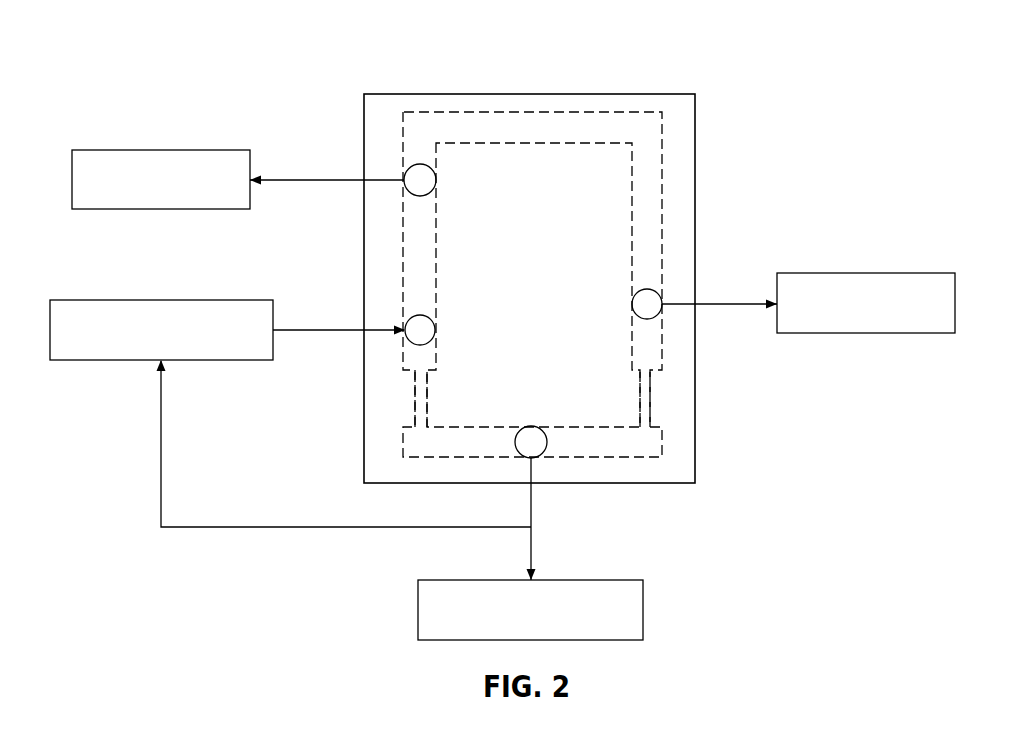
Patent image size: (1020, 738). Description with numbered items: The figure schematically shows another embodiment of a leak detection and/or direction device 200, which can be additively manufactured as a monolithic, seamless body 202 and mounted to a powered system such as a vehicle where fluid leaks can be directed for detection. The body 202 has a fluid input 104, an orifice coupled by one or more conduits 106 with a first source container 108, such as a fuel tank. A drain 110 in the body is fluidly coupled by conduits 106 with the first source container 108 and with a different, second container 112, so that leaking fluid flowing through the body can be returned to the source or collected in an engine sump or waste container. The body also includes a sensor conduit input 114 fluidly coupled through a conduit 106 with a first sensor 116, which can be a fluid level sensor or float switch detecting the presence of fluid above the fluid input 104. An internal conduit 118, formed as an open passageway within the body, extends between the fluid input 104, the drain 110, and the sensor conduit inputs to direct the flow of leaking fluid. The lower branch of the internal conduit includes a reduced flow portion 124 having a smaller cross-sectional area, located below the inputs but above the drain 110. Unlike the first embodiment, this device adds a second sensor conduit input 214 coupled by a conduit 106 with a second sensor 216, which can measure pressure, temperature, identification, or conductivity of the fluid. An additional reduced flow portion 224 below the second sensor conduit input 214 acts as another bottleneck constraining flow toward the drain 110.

The leak detection and/or direction device 200 is at (288, 50).
The additively manufactured body 202 is at (600, 94).
The fluid input 104 is at (420, 330).
The conduits 106 is at (333, 180).
The first source container 108 is at (162, 300).
The drain 110 is at (533, 443).
The second container 112 is at (605, 580).
The sensor conduit input 114 is at (420, 178).
The sensor 116 is at (150, 150).
The internal conduit 118 is at (480, 134).
The reduced flow portion 124 is at (420, 402).
The second sensor conduit input 214 is at (647, 300).
The second sensor 216 is at (864, 273).
The additional reduced flow portion 224 is at (645, 387).